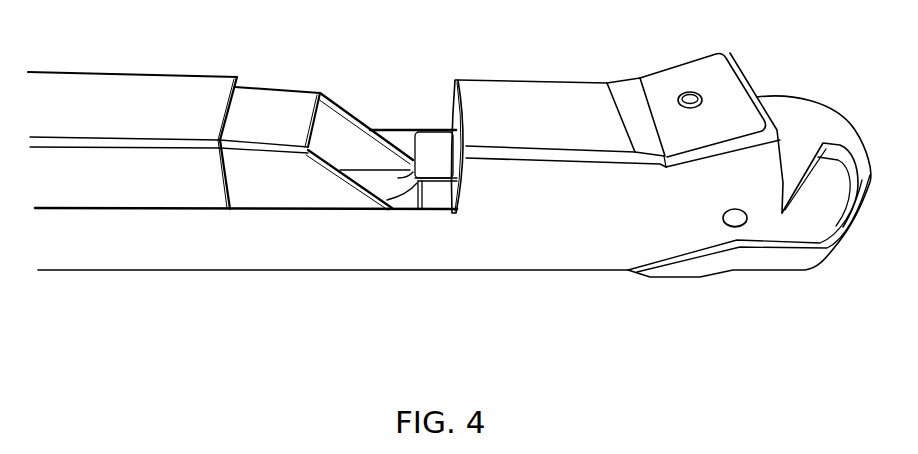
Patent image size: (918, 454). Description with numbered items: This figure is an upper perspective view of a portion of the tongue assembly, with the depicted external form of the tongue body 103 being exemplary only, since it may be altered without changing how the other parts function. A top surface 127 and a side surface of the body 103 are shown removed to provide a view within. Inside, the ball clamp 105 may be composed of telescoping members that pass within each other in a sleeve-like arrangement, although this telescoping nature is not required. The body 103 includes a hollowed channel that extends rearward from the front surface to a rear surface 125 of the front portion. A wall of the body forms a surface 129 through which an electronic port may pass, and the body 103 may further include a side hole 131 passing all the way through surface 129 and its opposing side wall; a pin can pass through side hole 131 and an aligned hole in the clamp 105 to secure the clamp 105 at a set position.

The tongue body 103 is at (549, 205).
The ball clamp 105 is at (162, 122).
The rear surface 125 is at (447, 80).
The top surface 127 is at (532, 97).
The surface 129 is at (255, 245).
The side hole 131 is at (723, 213).